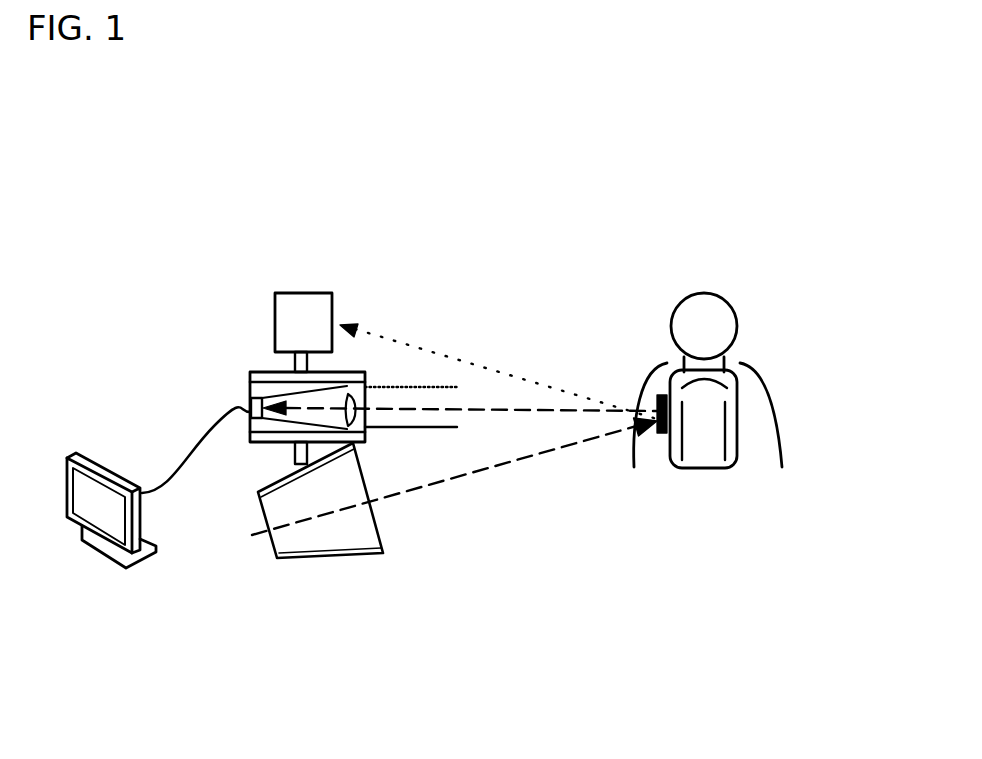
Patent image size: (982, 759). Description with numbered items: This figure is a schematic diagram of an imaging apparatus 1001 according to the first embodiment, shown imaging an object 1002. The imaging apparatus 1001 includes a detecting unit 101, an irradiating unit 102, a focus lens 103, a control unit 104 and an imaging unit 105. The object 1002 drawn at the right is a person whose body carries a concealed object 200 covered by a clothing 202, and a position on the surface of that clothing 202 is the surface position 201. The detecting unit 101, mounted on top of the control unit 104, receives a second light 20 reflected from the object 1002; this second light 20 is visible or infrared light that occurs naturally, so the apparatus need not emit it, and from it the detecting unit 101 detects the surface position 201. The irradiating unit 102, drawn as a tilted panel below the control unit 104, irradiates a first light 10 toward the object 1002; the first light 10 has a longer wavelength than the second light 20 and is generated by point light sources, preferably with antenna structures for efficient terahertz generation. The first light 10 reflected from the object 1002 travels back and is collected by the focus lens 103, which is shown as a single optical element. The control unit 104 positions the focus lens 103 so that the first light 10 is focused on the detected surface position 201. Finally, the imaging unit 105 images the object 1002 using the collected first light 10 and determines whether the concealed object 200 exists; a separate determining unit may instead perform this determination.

The imaging apparatus 1001 is at (135, 95).
The object 1002 is at (658, 100).
The detecting unit 101 is at (303, 292).
The irradiating unit 102 is at (352, 558).
The focus lens 103 is at (348, 398).
The control unit 104 is at (277, 372).
The imaging unit 105 is at (248, 397).
The first light 10 is at (489, 409).
The second light 20 is at (446, 354).
The concealed object 200 is at (665, 433).
The surface position 201 is at (641, 410).
The clothing 202 is at (768, 403).